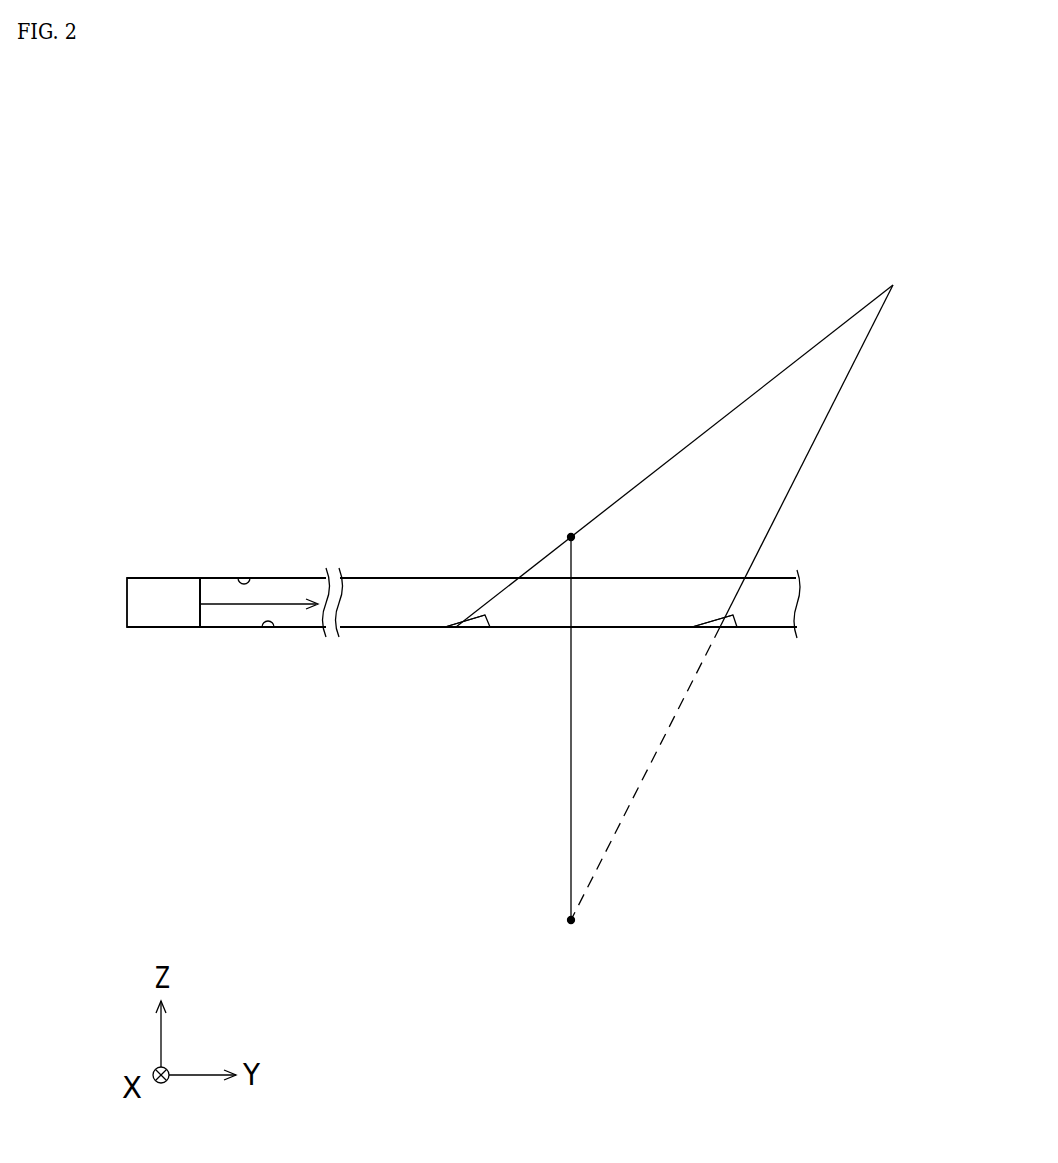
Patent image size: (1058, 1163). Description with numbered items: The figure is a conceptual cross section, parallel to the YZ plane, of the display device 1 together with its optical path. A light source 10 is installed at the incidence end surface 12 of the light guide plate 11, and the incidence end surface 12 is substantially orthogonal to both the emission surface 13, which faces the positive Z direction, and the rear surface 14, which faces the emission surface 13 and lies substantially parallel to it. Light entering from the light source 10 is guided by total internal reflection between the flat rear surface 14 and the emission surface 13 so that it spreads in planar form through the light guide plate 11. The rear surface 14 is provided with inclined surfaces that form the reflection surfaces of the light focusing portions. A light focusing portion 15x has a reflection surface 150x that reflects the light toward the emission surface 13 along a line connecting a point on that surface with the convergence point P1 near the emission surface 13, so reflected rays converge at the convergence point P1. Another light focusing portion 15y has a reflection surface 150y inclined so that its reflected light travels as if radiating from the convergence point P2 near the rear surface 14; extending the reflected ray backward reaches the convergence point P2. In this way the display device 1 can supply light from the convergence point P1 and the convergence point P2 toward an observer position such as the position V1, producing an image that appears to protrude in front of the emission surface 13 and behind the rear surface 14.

The display device 1 is at (298, 500).
The light source 10 is at (147, 620).
The light guide plate 11 is at (226, 620).
The incidence end surface 12 is at (198, 590).
The emission surface 13 is at (243, 577).
The rear surface 14 is at (270, 629).
The reflection surface 150x is at (455, 629).
The light focusing portion 15x is at (478, 630).
The reflection surface 150y is at (708, 630).
The light focusing portion 15y is at (729, 624).
The convergence point P1 is at (568, 537).
The convergence point P2 is at (567, 920).
The position V1 is at (695, 442).